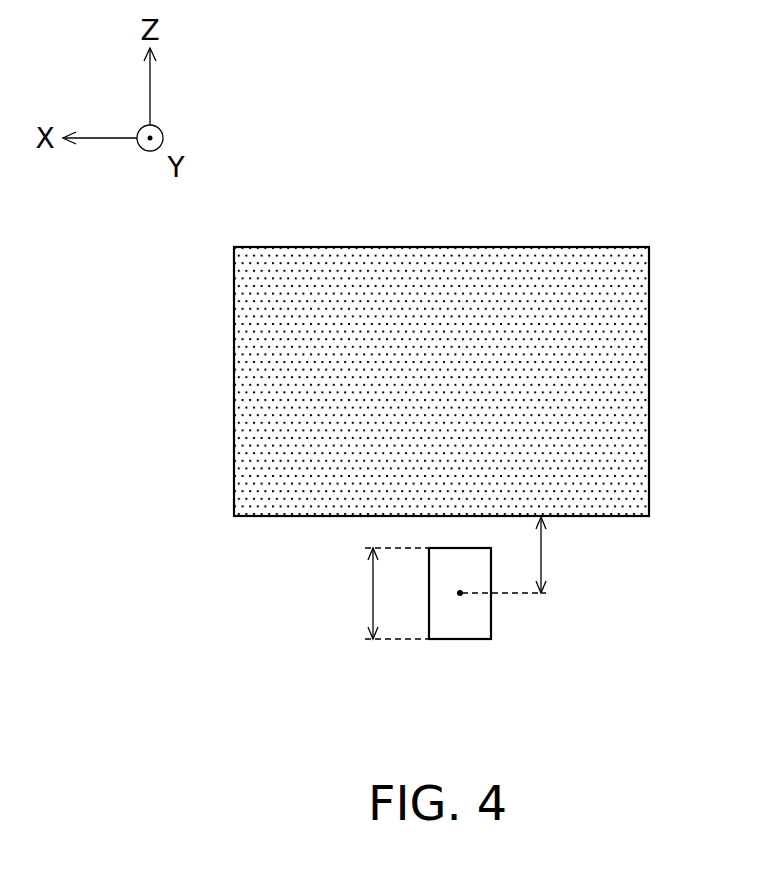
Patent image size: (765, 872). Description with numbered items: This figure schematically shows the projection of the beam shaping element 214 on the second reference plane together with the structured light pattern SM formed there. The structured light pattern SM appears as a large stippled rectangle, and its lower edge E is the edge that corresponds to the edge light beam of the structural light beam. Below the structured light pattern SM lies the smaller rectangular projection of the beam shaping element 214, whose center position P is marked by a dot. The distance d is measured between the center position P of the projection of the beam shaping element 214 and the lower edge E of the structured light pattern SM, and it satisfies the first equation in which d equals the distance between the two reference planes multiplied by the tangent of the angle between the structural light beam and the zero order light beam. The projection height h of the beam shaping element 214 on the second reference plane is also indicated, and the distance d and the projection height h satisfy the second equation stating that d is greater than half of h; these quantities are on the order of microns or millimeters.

The structured light pattern SM is at (628, 247).
The lower edge of the structured light pattern E is at (618, 517).
The beam shaping element 214 is at (492, 617).
The center position of the projection of the beam shaping element P is at (460, 597).
The distance d is at (516, 555).
The projection height of the beam shaping element h is at (386, 593).